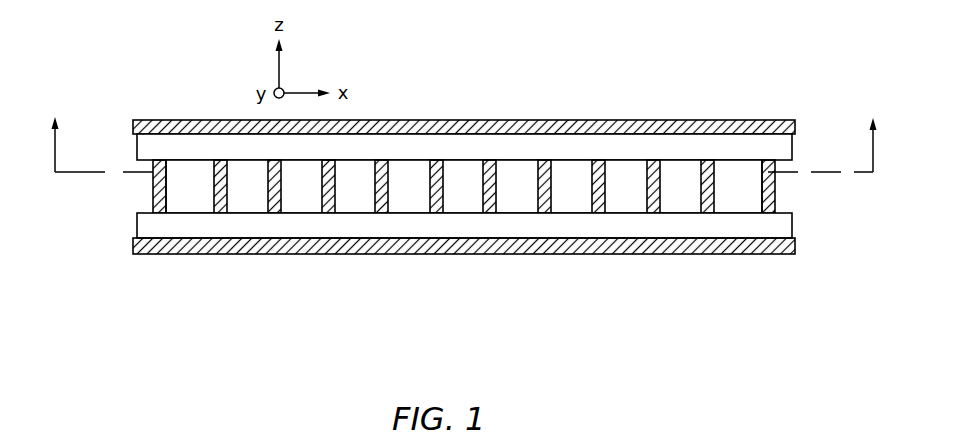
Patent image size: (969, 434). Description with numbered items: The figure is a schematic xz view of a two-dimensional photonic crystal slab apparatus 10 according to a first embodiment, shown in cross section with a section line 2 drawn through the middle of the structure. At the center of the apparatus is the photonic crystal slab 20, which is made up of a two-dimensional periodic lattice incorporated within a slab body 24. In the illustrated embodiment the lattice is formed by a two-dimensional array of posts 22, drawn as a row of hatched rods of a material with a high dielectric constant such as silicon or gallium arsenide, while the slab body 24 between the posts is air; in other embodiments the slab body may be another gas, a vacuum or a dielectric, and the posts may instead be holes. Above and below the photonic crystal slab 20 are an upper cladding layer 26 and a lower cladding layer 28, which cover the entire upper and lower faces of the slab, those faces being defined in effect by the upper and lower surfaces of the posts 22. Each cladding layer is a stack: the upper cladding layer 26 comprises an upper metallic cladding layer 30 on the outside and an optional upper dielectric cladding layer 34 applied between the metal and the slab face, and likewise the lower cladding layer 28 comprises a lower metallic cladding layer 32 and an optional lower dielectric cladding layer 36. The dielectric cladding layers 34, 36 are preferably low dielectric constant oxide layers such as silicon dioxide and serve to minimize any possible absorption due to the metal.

The section line 2- 2 is at (463, 132).
The photonic crystal slab apparatus 10 is at (461, 179).
The photonic crystal slab 20 is at (507, 165).
The posts 22 is at (776, 188).
The slab body 24 is at (744, 200).
The upper cladding layer 26 is at (428, 99).
The lower cladding layer 28 is at (428, 266).
The upper metallic cladding layer 30 is at (137, 135).
The lower metallic cladding layer 32 is at (133, 254).
The upper dielectric cladding layer 34 is at (137, 148).
The lower dielectric cladding layer 36 is at (137, 228).